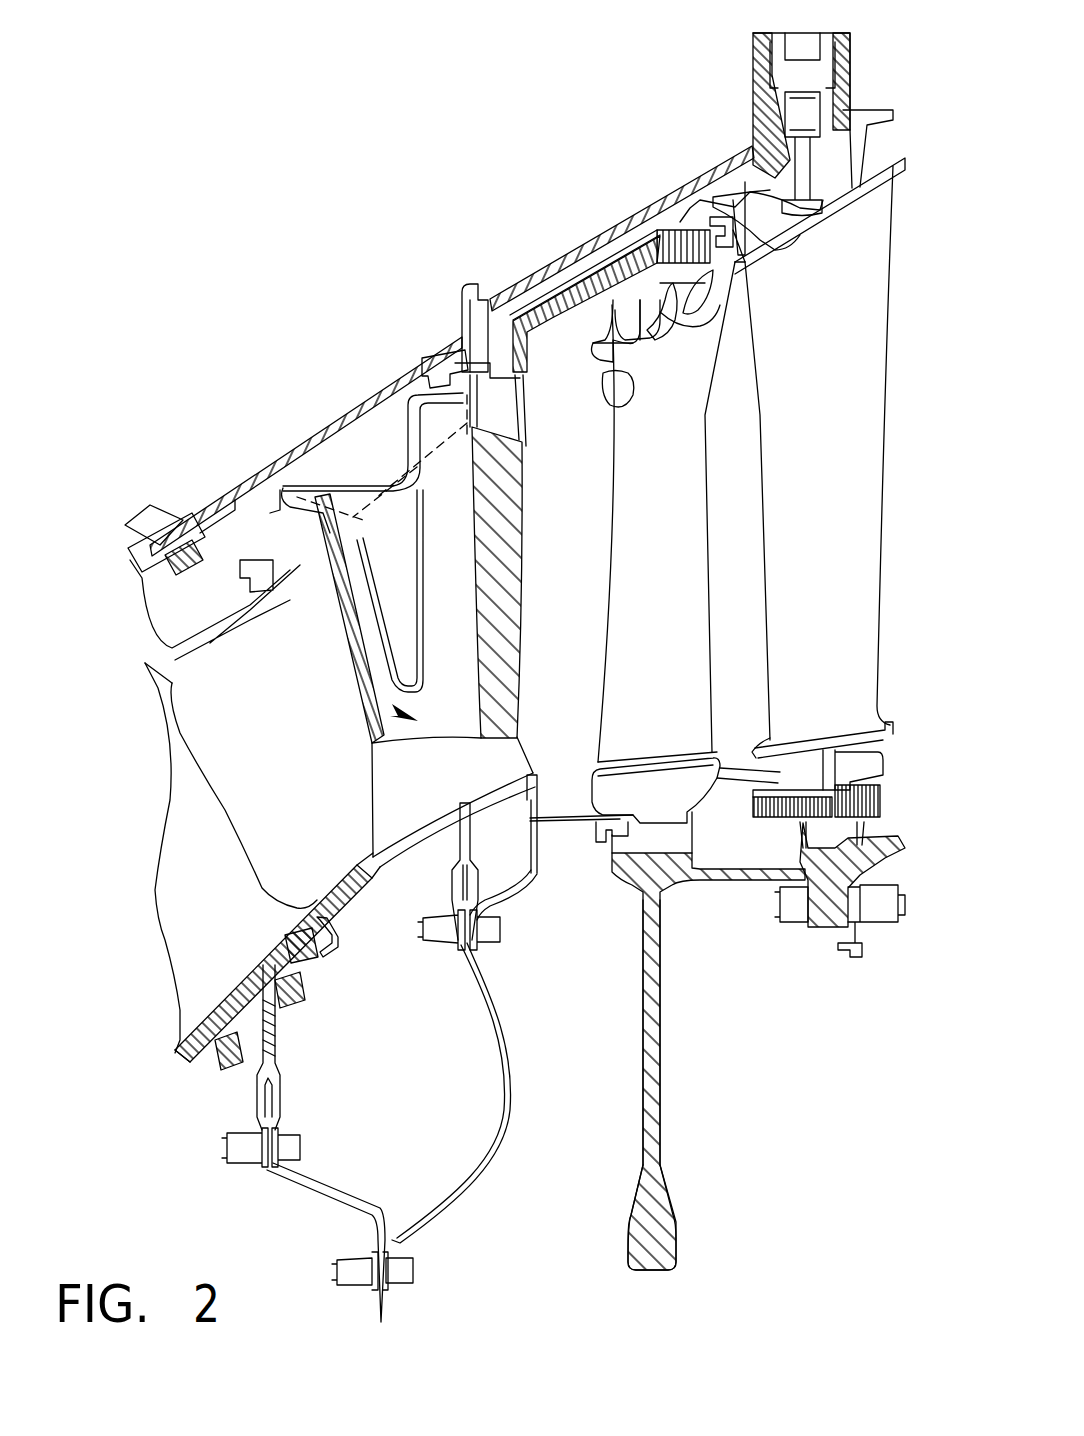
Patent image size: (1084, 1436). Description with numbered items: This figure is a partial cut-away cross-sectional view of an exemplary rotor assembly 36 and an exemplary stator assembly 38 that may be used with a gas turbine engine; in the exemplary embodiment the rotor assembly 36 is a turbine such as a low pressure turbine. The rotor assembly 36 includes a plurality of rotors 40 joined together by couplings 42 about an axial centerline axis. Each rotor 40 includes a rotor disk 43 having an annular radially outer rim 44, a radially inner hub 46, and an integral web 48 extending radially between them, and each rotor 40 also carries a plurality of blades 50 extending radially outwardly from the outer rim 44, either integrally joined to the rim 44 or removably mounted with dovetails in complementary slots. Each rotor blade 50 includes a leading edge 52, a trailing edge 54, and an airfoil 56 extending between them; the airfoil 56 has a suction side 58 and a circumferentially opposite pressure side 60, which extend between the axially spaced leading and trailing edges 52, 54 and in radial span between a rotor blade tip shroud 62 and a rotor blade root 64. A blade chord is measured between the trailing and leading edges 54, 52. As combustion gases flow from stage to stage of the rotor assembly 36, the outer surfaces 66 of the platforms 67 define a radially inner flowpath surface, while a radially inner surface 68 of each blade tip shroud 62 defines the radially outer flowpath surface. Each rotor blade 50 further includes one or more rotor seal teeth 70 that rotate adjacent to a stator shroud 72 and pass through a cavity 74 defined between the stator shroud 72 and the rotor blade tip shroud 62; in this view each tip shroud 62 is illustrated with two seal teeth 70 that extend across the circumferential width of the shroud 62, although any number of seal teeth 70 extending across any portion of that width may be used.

The rotor assembly 36 is at (836, 1012).
The stator assembly 38 is at (516, 278).
The rotor 40 is at (613, 931).
The coupling 42 is at (880, 925).
The rotor disk 43 is at (630, 1056).
The radially outer rim 44 is at (648, 847).
The radially inner hub 46 is at (653, 1225).
The integral web 48 is at (650, 1008).
The rotor blade 50 is at (599, 512).
The leading edge 52 is at (610, 495).
The trailing edge 54 is at (706, 410).
The airfoil 56 is at (662, 510).
The suction side 58 is at (625, 633).
The pressure side 60 is at (660, 478).
The rotor blade tip shroud 62 is at (645, 345).
The rotor blade root 64 is at (673, 752).
The outer surface 66 is at (643, 757).
The platform 67 is at (651, 742).
The radially inner surface 68 is at (611, 360).
The rotor seal tooth 70 is at (660, 313).
The stator shroud 72 is at (683, 233).
The cavity 74 is at (648, 283).